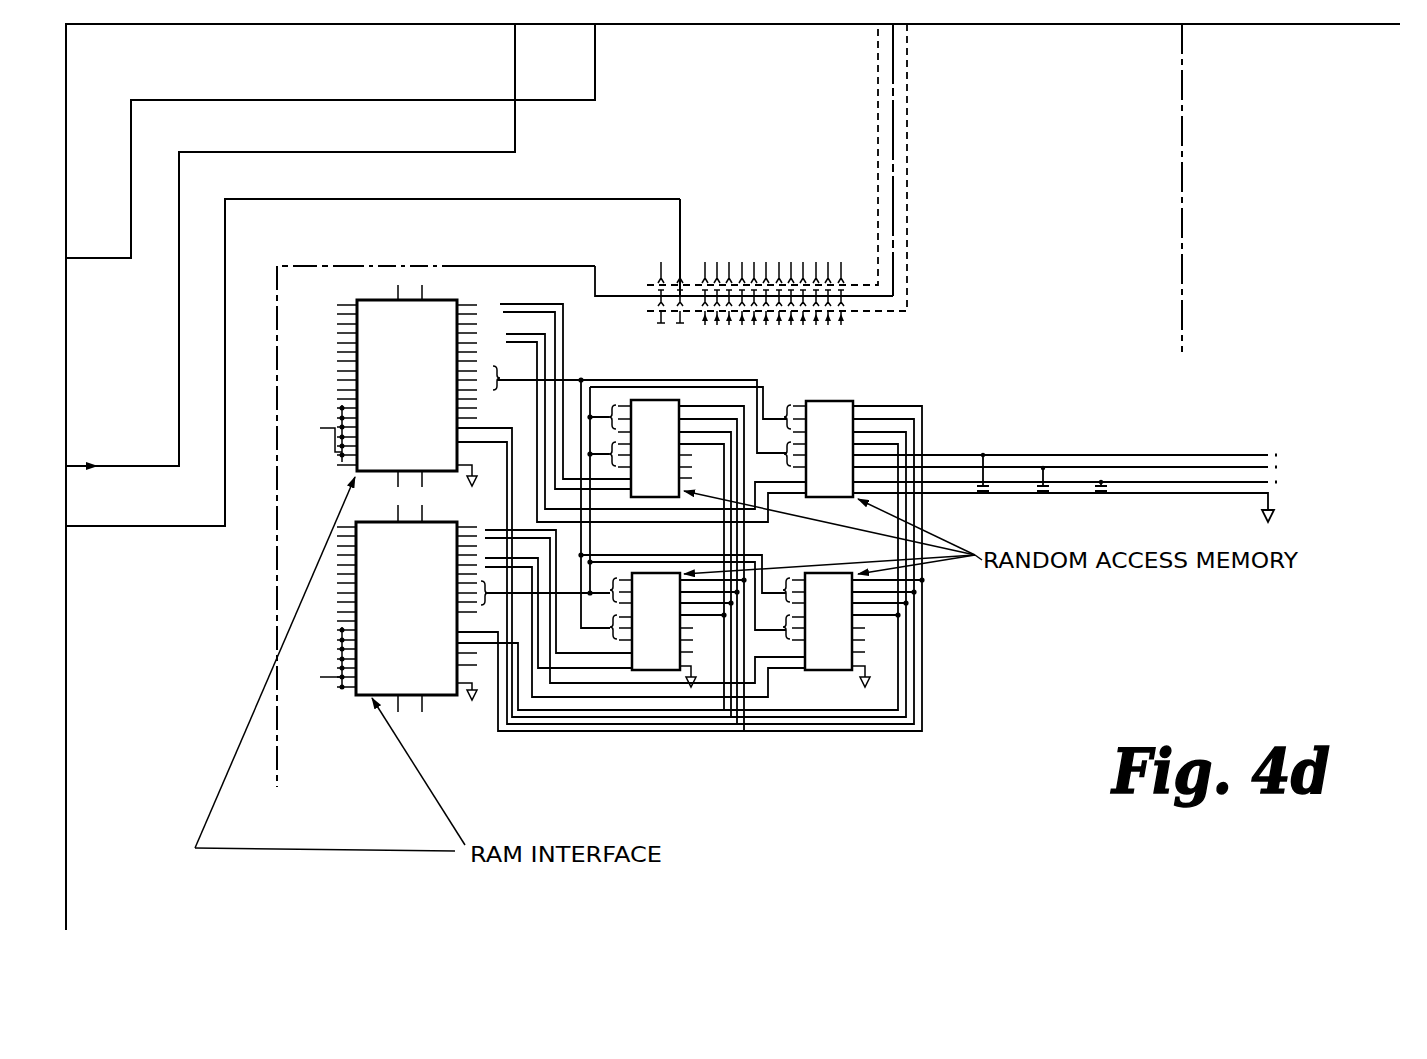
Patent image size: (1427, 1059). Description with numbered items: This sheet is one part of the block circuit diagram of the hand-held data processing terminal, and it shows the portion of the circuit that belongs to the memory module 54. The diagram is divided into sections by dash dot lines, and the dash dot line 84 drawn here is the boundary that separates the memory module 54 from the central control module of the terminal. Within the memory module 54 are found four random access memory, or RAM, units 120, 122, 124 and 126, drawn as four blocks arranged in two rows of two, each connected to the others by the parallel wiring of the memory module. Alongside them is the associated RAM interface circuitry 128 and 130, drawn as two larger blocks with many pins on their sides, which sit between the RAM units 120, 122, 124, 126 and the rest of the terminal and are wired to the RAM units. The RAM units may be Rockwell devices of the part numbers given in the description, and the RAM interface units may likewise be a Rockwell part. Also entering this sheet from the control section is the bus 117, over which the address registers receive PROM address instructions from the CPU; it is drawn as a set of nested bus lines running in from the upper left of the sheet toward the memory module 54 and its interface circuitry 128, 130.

The bus 117 is at (515, 43).
The dash dot line 84 is at (893, 73).
The memory module 54 is at (760, 192).
The RAM interface circuitry 128 is at (364, 300).
The RAM interface circuitry 130 is at (437, 697).
The random access memory unit 120 is at (641, 400).
The random access memory unit 122 is at (838, 402).
The random access memory unit 124 is at (650, 672).
The random access memory unit 126 is at (826, 672).